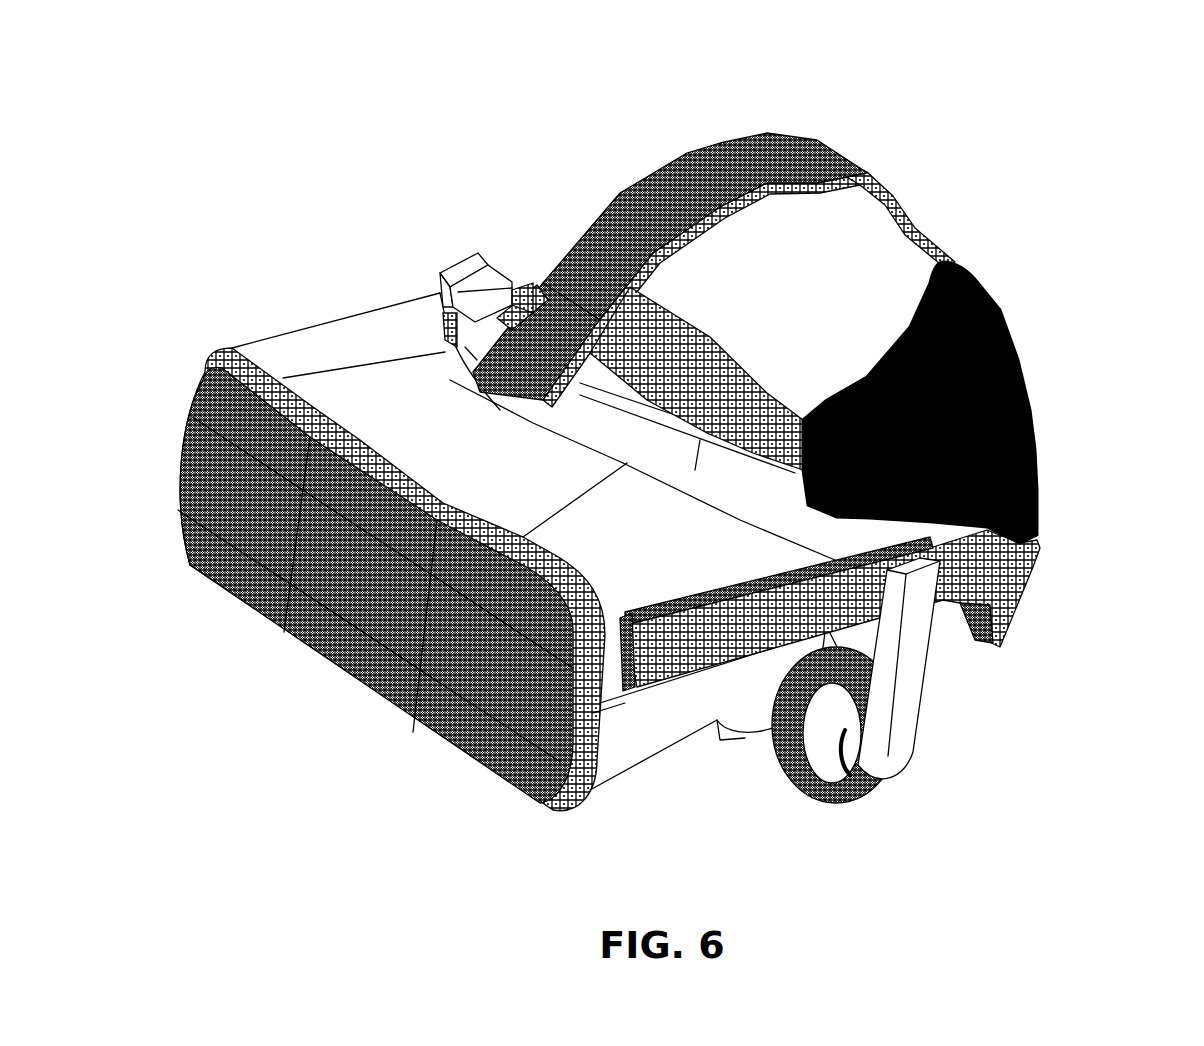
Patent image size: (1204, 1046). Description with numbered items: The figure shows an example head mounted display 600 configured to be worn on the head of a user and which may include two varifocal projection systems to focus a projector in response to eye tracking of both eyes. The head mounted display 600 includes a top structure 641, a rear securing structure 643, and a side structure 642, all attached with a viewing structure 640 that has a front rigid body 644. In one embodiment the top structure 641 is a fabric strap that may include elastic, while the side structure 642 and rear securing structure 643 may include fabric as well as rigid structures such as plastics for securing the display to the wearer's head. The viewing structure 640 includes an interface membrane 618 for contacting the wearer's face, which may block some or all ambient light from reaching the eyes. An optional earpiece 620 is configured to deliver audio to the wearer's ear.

The head mounted display 600 is at (1120, 62).
The interface membrane 618 is at (510, 290).
The earpiece 620 is at (921, 776).
The viewing structure 640 is at (369, 350).
The top structure 641 is at (827, 150).
The side structure 642 is at (705, 333).
The rear securing structure 643 is at (1020, 357).
The front rigid body 644 is at (341, 610).